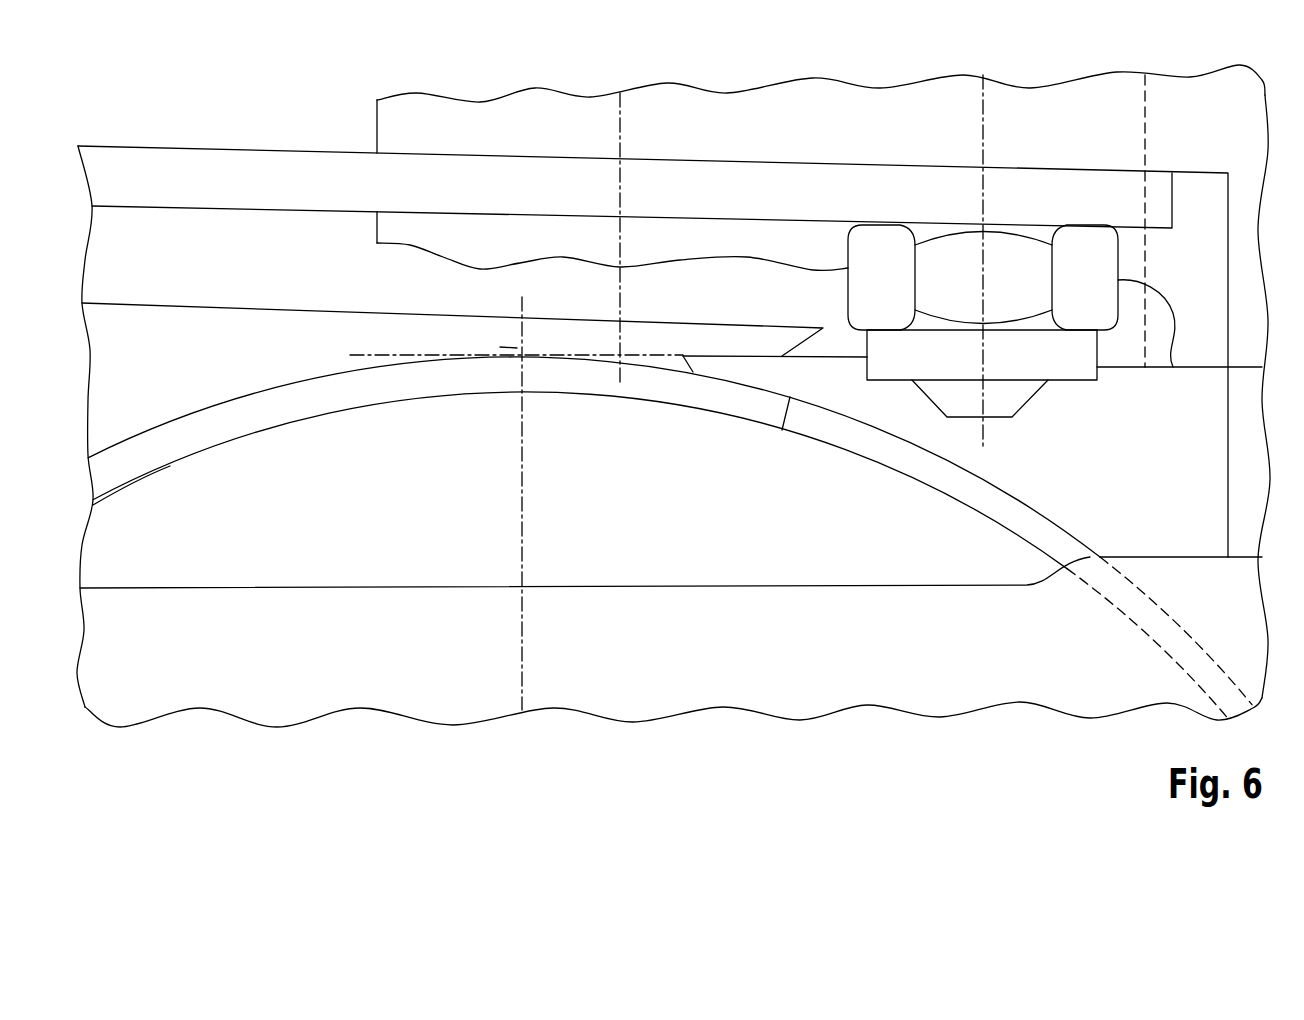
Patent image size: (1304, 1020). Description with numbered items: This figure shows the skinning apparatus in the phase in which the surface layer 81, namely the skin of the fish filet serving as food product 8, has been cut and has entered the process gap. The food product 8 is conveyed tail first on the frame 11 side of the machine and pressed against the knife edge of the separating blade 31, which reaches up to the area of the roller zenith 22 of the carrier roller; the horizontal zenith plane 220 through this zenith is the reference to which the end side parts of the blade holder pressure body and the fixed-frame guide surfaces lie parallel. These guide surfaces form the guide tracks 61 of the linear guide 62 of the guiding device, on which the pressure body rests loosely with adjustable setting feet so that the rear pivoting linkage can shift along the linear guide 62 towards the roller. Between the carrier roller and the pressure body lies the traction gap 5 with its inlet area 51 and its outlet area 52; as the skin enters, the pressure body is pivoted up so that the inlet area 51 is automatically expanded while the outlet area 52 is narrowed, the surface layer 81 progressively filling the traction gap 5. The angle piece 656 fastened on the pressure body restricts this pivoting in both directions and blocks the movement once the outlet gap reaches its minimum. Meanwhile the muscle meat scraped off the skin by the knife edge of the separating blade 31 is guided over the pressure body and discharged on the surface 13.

The angle piece 656 is at (704, 180).
The food product 8 is at (203, 323).
The zenith plane 220 is at (350, 355).
The roller zenith 22 is at (500, 347).
The surface 13 is at (848, 357).
The separating blade 31 is at (680, 372).
The traction gap 5 is at (948, 480).
The inlet area 51 is at (858, 437).
The surface layer 81 is at (738, 420).
The outlet area 52 is at (1152, 618).
The guide tracks 61 is at (585, 560).
The linear guide 62 is at (633, 585).
The frame 11 is at (360, 566).